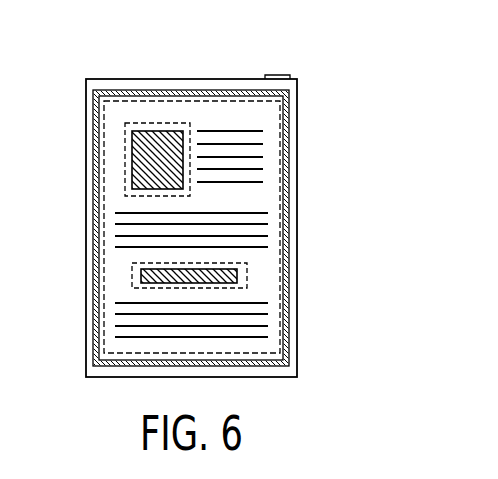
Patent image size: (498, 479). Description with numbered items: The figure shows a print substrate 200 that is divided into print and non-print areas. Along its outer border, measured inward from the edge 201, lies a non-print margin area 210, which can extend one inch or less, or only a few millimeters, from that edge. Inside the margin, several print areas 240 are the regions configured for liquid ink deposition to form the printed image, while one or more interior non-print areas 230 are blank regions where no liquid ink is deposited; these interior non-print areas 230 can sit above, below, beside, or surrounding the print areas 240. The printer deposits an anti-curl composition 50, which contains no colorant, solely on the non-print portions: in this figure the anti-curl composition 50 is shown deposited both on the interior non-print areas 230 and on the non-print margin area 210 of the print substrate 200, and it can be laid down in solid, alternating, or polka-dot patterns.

The print substrate 200 is at (308, 72).
The edge 201 is at (277, 73).
The non-print margin area 210 is at (284, 182).
The interior non-print area 230 is at (139, 124).
The print area 240 is at (248, 157).
The anti-curl composition 50 is at (141, 155).